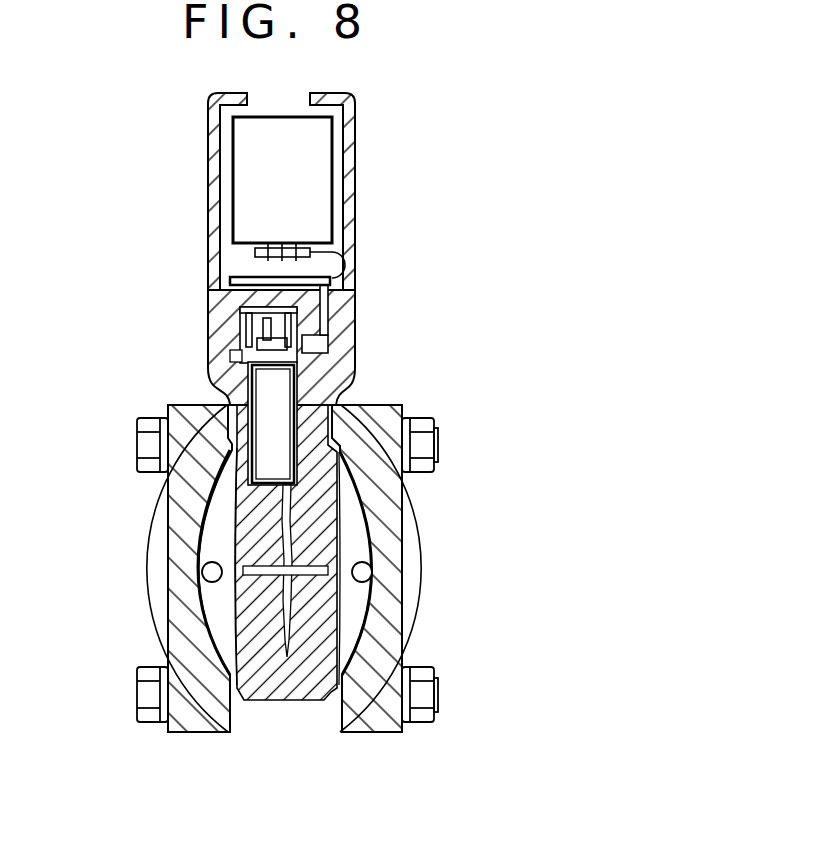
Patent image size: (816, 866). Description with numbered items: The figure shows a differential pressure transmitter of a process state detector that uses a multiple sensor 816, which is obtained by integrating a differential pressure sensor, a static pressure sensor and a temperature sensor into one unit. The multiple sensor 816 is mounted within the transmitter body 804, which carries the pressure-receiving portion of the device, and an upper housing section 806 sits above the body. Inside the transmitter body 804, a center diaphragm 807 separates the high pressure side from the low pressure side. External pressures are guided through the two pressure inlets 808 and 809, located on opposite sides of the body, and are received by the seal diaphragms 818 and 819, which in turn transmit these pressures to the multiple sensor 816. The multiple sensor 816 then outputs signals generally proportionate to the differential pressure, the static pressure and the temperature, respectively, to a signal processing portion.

The transmitter body 804 is at (243, 522).
The electronic circuit unit 806 is at (323, 158).
The center diaphragm 807 is at (338, 503).
The pressure inlet 808 is at (199, 570).
The pressure inlet 809 is at (371, 573).
The multiple sensor 816 is at (318, 347).
The seal diaphragm 818 is at (230, 603).
The seal diaphragm 819 is at (341, 547).